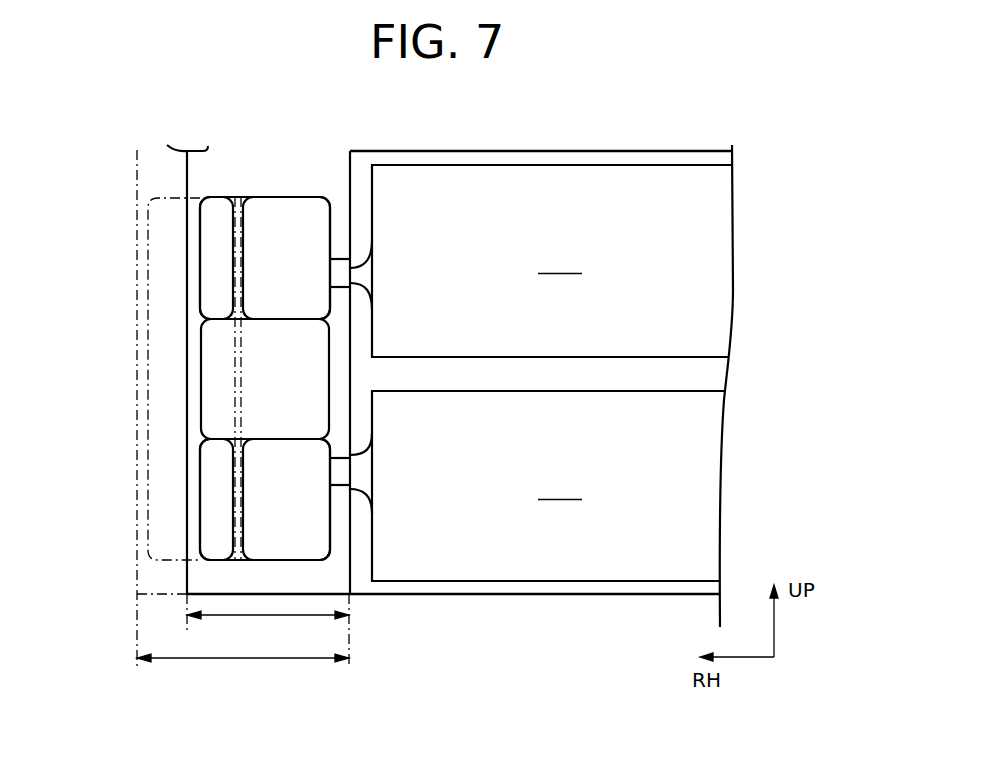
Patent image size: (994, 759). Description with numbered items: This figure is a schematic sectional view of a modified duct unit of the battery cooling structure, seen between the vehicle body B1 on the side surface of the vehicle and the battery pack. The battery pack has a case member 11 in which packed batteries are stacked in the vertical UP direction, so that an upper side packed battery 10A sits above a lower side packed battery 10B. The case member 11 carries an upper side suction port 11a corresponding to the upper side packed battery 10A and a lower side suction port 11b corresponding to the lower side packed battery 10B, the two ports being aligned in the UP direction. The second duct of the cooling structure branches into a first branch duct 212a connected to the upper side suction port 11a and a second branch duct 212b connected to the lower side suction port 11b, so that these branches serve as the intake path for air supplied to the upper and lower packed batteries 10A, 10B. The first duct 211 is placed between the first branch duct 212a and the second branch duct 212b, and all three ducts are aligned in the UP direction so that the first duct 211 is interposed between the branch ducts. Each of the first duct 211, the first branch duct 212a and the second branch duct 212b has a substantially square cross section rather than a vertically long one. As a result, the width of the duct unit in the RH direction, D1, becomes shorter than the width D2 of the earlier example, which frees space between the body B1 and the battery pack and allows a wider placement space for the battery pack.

The case member 11 is at (622, 146).
The upper side suction port 11a is at (357, 250).
The lower side suction port 11b is at (351, 474).
The upper side packed battery 10A is at (552, 261).
The lower side packed battery 10B is at (548, 486).
The first duct 211 is at (201, 387).
The first branch duct 212a is at (200, 245).
The second branch duct 212b is at (200, 505).
The body B1 is at (187, 308).
The width of the duct unit D1 is at (262, 616).
The width of the duct unit in the earlier example D2 is at (237, 659).